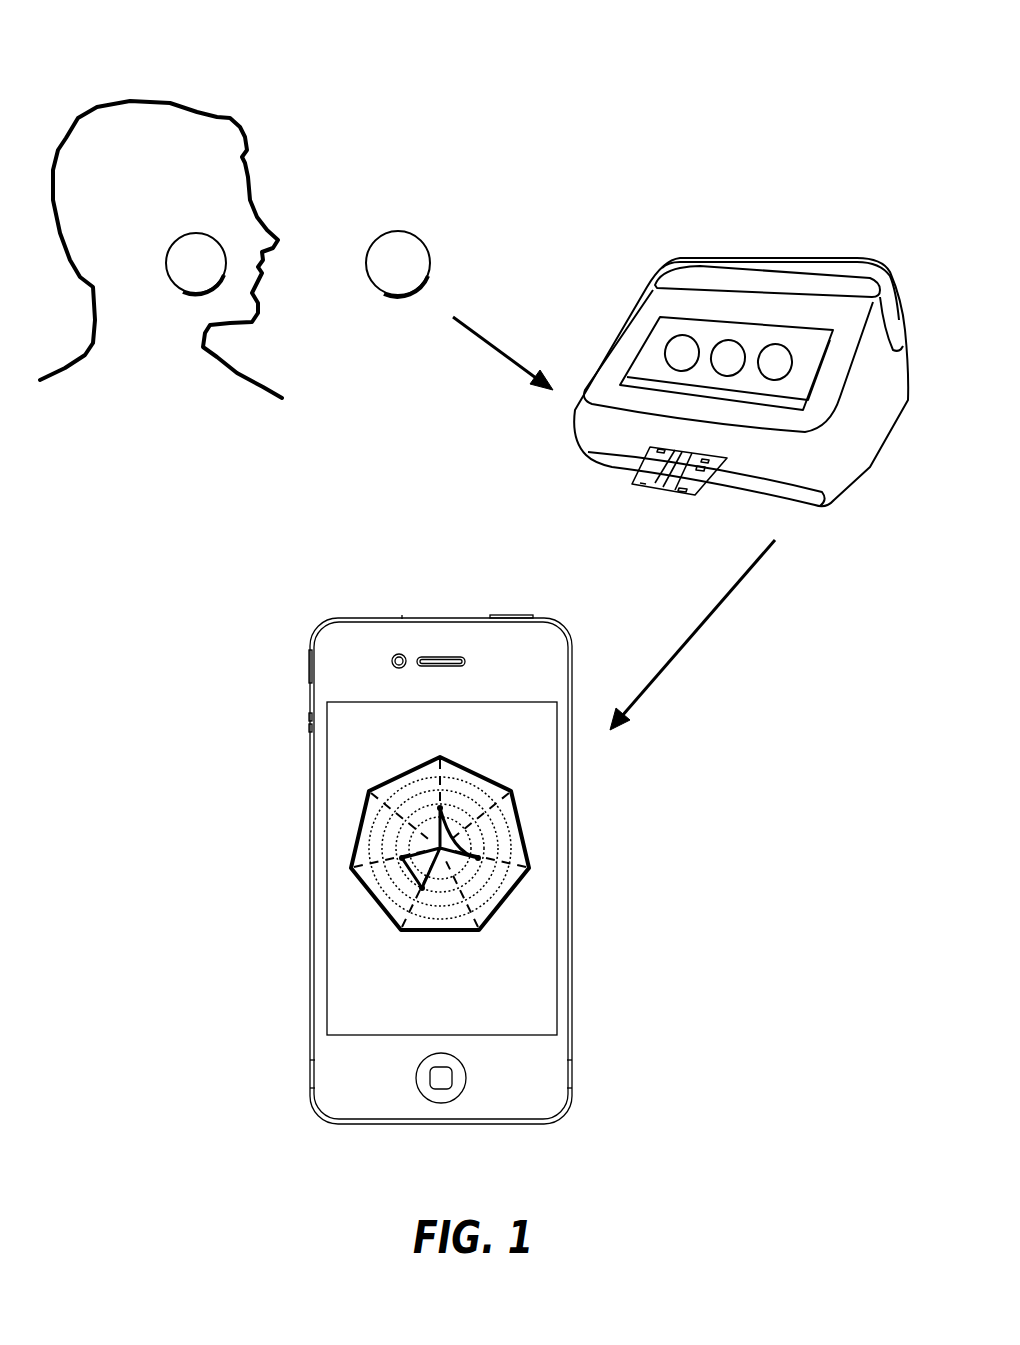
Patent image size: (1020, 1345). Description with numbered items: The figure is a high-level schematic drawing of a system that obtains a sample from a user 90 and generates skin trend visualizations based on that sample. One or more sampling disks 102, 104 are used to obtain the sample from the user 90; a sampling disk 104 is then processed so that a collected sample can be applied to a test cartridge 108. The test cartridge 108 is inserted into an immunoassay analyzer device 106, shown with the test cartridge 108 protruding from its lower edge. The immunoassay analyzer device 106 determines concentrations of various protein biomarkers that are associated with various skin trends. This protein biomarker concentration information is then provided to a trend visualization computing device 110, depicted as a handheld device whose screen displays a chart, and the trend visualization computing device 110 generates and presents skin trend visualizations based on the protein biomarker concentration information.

The user 90 is at (130, 102).
The sampling disk 102 is at (162, 251).
The sampling disk 104 is at (386, 233).
The immunoassay analyzer device 106 is at (651, 274).
The test cartridge 108 is at (676, 497).
The trend visualization computing device 110 is at (316, 630).